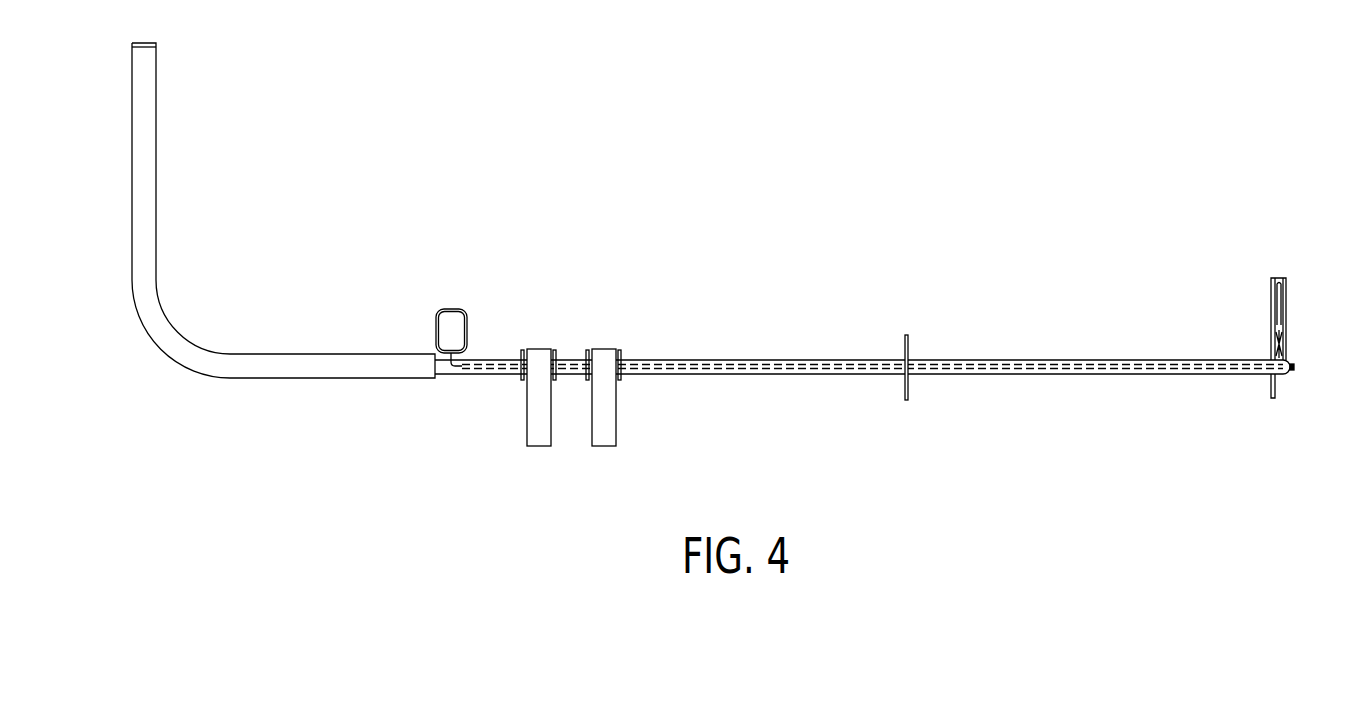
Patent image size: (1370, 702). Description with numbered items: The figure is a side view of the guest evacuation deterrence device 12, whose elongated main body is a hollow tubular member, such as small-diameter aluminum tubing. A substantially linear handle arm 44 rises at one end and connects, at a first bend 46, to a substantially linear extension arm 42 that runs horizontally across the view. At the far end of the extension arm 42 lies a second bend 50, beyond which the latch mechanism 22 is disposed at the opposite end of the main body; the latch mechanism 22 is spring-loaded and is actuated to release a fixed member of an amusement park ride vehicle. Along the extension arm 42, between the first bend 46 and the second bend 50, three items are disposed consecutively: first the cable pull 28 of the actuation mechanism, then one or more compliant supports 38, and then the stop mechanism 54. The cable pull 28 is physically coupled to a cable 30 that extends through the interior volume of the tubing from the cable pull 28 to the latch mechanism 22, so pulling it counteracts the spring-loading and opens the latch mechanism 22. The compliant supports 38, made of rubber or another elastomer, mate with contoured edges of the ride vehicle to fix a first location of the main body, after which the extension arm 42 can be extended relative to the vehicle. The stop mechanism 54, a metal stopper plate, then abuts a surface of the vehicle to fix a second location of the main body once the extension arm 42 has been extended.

The guest evacuation deterrence device 12 is at (872, 122).
The latch mechanism 22 is at (1287, 310).
The cable pull 28 is at (452, 308).
The cable 30 is at (762, 362).
The compliant supports 38 is at (537, 446).
The extension arm 42 is at (763, 376).
The handle arm 44 is at (132, 193).
The first bend 46 is at (160, 343).
The second bend 50 is at (1290, 374).
The stop mechanism 54 is at (908, 390).